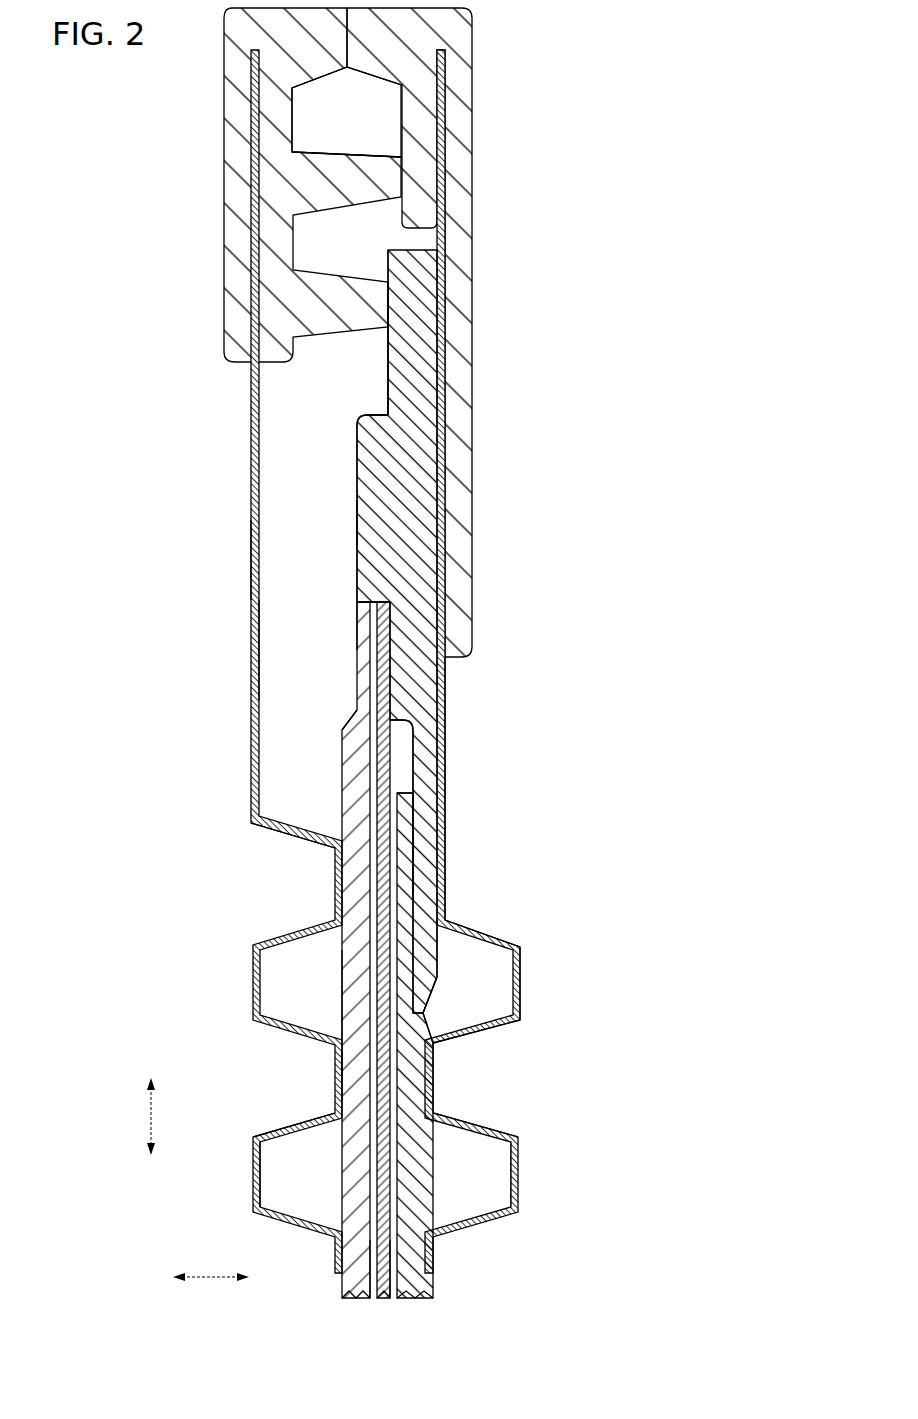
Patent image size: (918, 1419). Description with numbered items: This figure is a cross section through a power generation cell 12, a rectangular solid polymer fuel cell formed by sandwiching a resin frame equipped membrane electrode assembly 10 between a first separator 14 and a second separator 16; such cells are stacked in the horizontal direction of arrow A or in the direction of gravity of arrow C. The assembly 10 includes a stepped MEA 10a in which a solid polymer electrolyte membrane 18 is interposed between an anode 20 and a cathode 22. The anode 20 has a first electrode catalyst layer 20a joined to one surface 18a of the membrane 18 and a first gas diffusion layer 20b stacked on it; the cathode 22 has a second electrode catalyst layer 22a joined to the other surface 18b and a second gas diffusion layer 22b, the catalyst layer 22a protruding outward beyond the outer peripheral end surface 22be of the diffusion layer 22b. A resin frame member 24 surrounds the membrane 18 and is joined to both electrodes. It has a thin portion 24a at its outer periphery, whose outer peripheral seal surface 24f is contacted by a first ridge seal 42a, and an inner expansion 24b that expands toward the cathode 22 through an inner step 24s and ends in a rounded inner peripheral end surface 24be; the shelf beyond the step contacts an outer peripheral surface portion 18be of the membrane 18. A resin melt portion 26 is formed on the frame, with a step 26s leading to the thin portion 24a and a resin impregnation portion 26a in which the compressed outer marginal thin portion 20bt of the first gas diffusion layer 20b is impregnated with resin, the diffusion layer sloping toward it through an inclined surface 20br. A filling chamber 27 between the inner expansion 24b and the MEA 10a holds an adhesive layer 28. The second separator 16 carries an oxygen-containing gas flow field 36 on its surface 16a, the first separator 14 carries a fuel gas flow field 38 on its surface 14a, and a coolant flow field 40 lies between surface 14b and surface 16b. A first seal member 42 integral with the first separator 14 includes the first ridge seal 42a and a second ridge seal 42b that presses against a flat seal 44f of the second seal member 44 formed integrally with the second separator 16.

The resin frame equipped membrane electrode assembly 10 is at (344, 522).
The stepped MEA 10a is at (430, 1155).
The power generation cell 12 is at (110, 110).
The first separator 14 is at (255, 947).
The surface of first separator 14a is at (272, 680).
The surface of first separator 14b is at (258, 552).
The second separator 16 is at (524, 947).
The surface of second separator 16a is at (495, 940).
The surface of second separator 16b is at (518, 960).
The solid polymer electrolyte membrane 18 is at (388, 975).
The one surface of solid polymer electrolyte membrane 18a is at (350, 1000).
The surface of solid polymer electrolyte membrane 18b is at (470, 1003).
The outer peripheral surface portion of solid polymer electrolyte membrane 18be is at (415, 815).
The anode 20 is at (236, 1042).
The first electrode catalyst layer 20a is at (338, 1063).
The first gas diffusion layer 20b is at (338, 1085).
The outer marginal thin portion 20bt is at (362, 650).
The inclined surface 20br is at (350, 712).
The cathode 22 is at (521, 1240).
The second electrode catalyst layer 22a is at (430, 1250).
The second gas diffusion layer 22b is at (430, 1283).
The outer peripheral end surface of second gas diffusion layer 22be is at (435, 1030).
The resin frame member 24 is at (384, 255).
The thin portion 24a is at (400, 340).
The inner expansion 24b is at (440, 882).
The inner peripheral end surface 24be is at (440, 985).
The outer peripheral seal surface 24f is at (385, 365).
The inner step 24s is at (448, 757).
The resin melt portion 26 is at (375, 480).
The resin impregnation portion 26a is at (368, 612).
The step 26s is at (380, 412).
The filling chamber 27 is at (400, 780).
The adhesive layer 28 is at (438, 845).
The oxygen-containing gas flow field 36 is at (473, 1178).
The fuel gas flow field 38 is at (294, 1178).
The coolant flow field 40 is at (310, 882).
The first seal member 42 is at (224, 65).
The first ridge seal 42a is at (392, 300).
The second ridge seal 42b is at (385, 180).
The second seal member 44 is at (474, 60).
The flat seal 44f is at (415, 118).